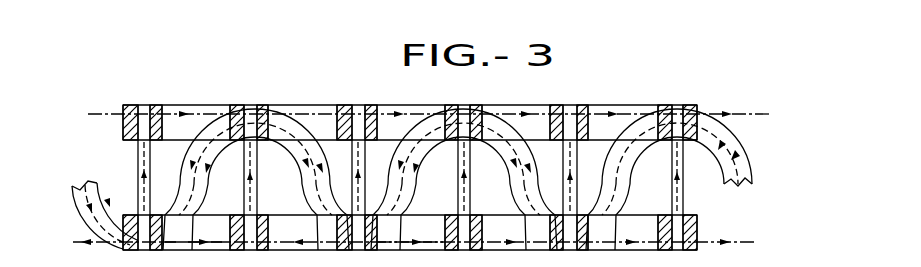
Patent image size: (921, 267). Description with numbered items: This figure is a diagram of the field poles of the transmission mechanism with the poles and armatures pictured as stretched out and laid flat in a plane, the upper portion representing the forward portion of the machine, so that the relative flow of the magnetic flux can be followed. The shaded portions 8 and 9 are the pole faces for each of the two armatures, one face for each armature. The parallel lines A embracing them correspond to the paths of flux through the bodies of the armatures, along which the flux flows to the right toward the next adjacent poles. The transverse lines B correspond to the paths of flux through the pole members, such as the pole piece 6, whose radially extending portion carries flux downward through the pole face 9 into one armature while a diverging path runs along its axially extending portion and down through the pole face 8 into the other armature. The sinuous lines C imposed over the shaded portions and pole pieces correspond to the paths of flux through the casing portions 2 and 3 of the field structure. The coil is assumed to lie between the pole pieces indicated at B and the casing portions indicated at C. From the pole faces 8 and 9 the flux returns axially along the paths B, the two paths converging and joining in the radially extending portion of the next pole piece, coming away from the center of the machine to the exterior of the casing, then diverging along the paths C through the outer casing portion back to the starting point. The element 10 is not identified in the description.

The casing portion 2 is at (404, 241).
The casing portion 3 is at (412, 188).
The pole piece 6 is at (138, 153).
The pole face 8 is at (145, 122).
The pole face 9 is at (158, 230).
The bottom plate passage 10 is at (338, 254).
The paths of flux through the armatures A is at (197, 113).
The paths of flux through the pole members B is at (141, 173).
The paths of flux through the casing portions C is at (190, 172).